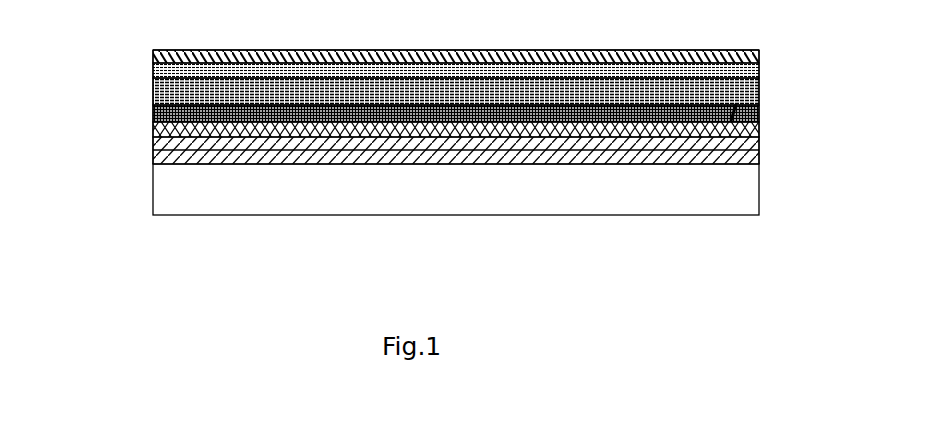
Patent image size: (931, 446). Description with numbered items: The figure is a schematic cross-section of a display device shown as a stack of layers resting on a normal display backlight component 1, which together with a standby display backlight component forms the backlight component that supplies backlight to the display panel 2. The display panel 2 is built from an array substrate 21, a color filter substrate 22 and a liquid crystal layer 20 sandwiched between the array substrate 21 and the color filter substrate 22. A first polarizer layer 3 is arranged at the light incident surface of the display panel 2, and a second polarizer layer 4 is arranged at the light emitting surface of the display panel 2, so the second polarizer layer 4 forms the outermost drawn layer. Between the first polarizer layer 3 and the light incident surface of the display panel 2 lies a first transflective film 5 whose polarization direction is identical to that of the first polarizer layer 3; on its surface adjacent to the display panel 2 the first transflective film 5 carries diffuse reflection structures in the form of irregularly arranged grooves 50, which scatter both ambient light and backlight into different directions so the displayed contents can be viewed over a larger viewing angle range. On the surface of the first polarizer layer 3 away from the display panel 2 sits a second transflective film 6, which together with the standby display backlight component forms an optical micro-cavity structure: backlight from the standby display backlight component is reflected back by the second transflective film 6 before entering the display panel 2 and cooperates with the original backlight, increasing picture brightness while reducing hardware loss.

The normal display backlight component 1 is at (759, 197).
The display panel 2 is at (391, 81).
The first polarizer layer 3 is at (153, 142).
The second polarizer layer 4 is at (153, 50).
The first transflective film 5 is at (759, 132).
The second transflective film 6 is at (153, 157).
The liquid crystal layer 20 is at (153, 90).
The array substrate 21 is at (153, 112).
The color filter substrate 22 is at (153, 70).
The grooves 50 is at (759, 83).